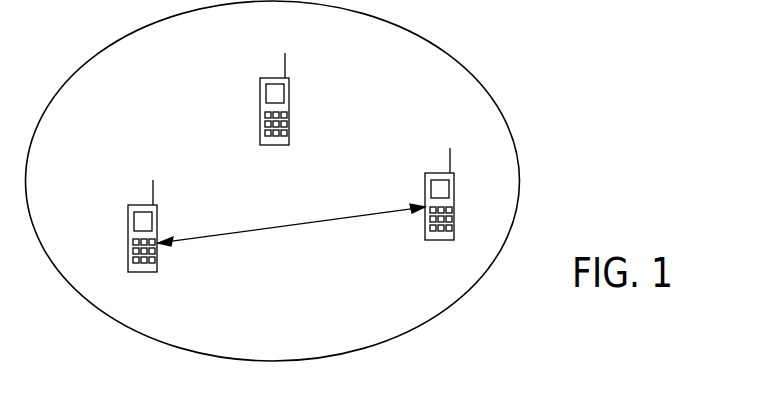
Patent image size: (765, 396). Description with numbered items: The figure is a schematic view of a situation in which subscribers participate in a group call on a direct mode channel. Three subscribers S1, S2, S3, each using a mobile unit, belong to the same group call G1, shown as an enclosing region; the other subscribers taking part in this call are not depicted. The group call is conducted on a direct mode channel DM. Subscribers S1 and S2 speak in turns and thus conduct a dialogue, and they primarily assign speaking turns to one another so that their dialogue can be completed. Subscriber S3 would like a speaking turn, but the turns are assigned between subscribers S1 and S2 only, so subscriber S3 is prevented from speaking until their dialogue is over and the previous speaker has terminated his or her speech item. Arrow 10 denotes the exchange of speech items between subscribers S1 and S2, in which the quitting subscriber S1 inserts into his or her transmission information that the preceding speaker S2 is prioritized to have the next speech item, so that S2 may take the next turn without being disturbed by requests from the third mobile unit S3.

The group call G1 is at (469, 68).
The direct mode channel DM is at (128, 141).
The subscriber S1 is at (143, 273).
The subscriber S2 is at (438, 241).
The subscriber S3 is at (289, 104).
The arrow 10 is at (283, 228).